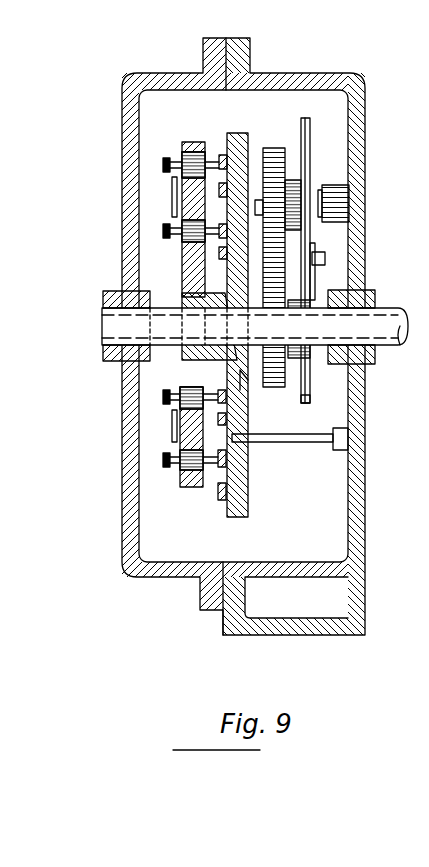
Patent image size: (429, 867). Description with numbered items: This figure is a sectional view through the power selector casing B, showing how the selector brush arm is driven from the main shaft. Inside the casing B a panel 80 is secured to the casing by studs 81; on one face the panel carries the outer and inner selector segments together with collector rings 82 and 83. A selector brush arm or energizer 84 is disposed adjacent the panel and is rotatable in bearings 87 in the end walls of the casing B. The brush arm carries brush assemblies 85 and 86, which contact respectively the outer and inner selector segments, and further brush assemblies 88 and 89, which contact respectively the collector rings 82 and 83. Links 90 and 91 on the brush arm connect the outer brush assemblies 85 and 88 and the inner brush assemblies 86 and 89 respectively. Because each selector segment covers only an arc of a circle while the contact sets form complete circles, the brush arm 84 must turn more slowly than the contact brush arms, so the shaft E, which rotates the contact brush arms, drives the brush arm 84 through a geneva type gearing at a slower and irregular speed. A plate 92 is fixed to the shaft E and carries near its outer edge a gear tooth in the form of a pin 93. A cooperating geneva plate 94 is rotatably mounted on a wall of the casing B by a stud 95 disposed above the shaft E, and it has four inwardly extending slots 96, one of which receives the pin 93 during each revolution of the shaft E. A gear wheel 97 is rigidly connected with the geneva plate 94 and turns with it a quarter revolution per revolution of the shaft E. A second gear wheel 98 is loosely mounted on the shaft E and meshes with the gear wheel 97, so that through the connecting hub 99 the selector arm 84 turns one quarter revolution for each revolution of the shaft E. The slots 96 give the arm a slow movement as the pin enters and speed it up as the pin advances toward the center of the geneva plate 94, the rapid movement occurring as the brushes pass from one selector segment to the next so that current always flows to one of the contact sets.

The panel 80 is at (249, 503).
The studs 81 is at (282, 443).
The collector ring 82 is at (190, 255).
The collector ring 83 is at (232, 393).
The selector brush arm 84 is at (195, 486).
The brush assembly 85 is at (168, 162).
The brush assembly 86 is at (166, 461).
The bearings 87 is at (106, 348).
The brush assembly 88 is at (167, 235).
The brush assembly 89 is at (178, 372).
The link 90 is at (173, 203).
The link 91 is at (174, 428).
The plate 92 is at (313, 283).
The pin 93 is at (320, 255).
The geneva plate 94 is at (305, 168).
The stud 95 is at (336, 200).
The slots 96 is at (310, 127).
The gear wheel 97 is at (283, 148).
The second gear wheel 98 is at (288, 386).
The connecting hub 99 is at (262, 380).
The power selector casing B is at (365, 450).
The shaft E is at (386, 325).